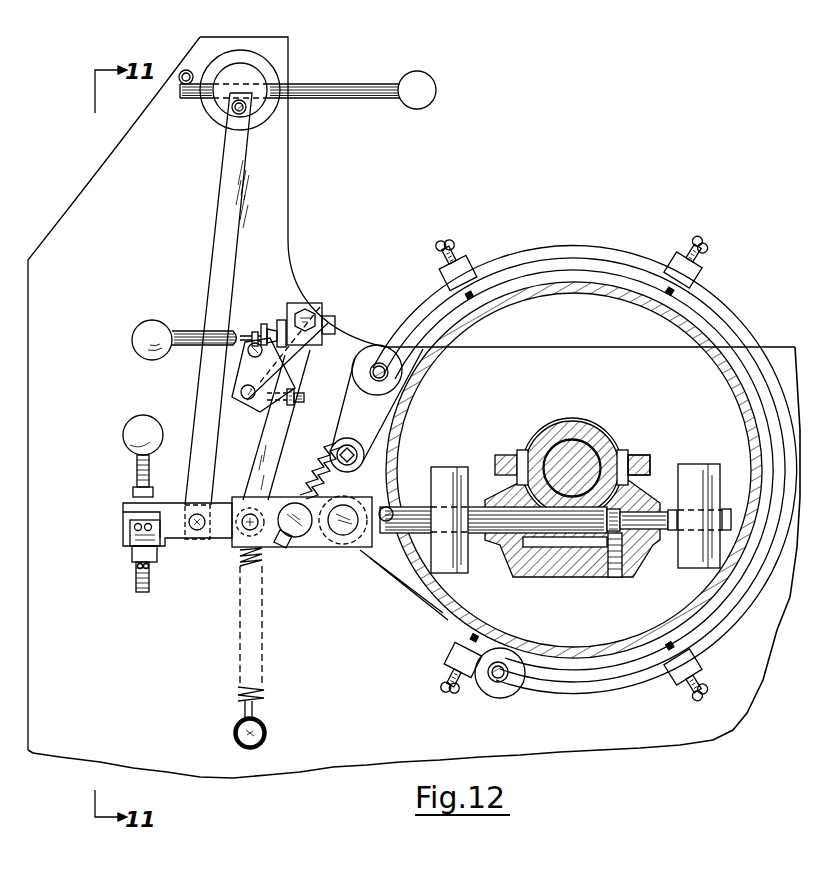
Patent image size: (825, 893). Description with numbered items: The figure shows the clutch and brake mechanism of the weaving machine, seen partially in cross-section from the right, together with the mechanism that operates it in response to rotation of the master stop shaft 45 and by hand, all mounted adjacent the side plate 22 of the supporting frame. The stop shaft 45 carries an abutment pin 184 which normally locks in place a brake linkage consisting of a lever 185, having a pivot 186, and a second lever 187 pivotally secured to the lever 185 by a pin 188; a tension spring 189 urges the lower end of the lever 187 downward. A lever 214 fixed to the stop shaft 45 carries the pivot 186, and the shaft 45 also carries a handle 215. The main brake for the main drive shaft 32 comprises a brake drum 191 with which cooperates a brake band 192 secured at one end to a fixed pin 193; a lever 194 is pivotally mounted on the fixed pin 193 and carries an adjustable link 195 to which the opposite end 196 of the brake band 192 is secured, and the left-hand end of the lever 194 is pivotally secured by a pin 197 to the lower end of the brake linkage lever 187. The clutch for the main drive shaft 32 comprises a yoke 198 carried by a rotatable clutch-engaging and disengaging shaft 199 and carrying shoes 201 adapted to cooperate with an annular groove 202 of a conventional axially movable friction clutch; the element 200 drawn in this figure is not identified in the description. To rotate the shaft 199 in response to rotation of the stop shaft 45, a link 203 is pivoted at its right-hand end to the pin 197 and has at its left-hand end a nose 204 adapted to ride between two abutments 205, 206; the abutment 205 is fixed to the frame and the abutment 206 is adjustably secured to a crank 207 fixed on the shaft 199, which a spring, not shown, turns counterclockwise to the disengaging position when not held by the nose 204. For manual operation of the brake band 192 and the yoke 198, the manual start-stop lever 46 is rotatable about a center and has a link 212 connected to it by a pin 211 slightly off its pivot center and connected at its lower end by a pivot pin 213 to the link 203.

The side plate 22 is at (100, 163).
The main drive shaft 32 is at (568, 440).
The stop shaft 45 is at (320, 308).
The manual control handle 46 is at (402, 84).
The abutment pin 184 is at (283, 322).
The lever 185 is at (244, 380).
The pivot 186 is at (264, 412).
The second lever 187 is at (272, 446).
The pin 188 is at (250, 340).
The tension spring 189 is at (262, 615).
The brake drum 191 is at (402, 408).
The brake band 192 is at (440, 612).
The fixed pin 193 is at (340, 542).
The lever 194 is at (305, 540).
The adjustable link 195 is at (318, 478).
The opposite end of the brake band 196 is at (335, 442).
The pin 197 is at (238, 548).
The yoke 198 is at (636, 458).
The clutch-engaging and disengaging shaft 199 is at (487, 560).
The axle shaft 200 is at (555, 518).
The shoes 201 is at (520, 452).
The annular groove 202 is at (590, 440).
The link 203 is at (222, 535).
The nose 204 is at (140, 515).
The abutment 205 is at (136, 492).
The abutment 206 is at (132, 530).
The crank 207 is at (132, 553).
The pin 211 is at (238, 100).
The link 212 is at (227, 228).
The pivot pin 213 is at (197, 532).
The lever 214 is at (283, 358).
The handle 215 is at (173, 330).